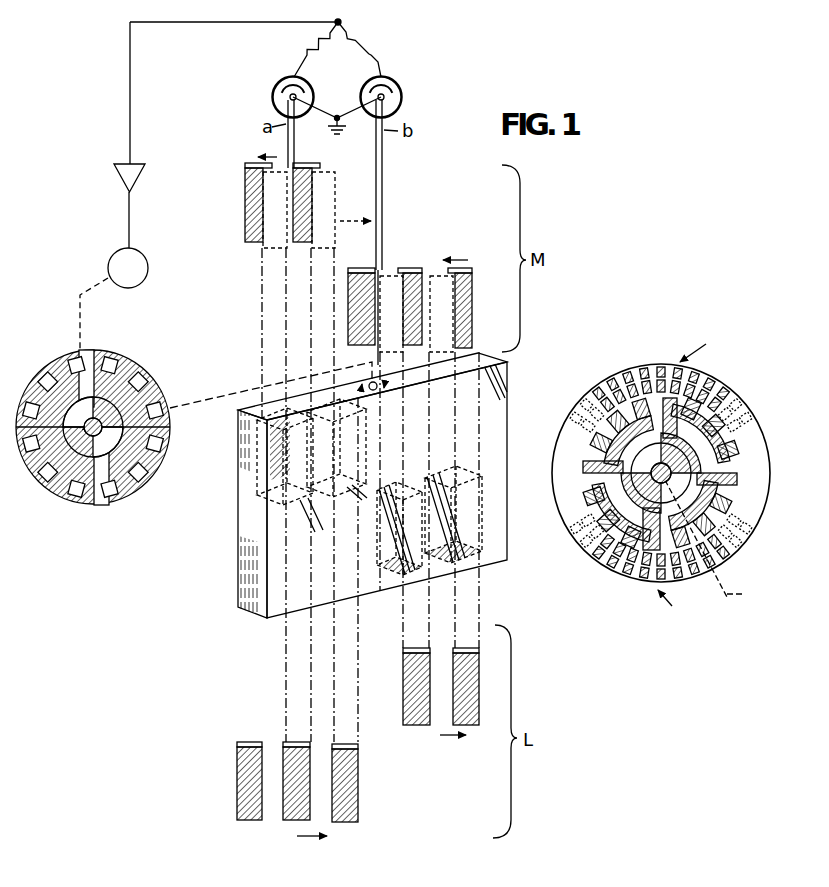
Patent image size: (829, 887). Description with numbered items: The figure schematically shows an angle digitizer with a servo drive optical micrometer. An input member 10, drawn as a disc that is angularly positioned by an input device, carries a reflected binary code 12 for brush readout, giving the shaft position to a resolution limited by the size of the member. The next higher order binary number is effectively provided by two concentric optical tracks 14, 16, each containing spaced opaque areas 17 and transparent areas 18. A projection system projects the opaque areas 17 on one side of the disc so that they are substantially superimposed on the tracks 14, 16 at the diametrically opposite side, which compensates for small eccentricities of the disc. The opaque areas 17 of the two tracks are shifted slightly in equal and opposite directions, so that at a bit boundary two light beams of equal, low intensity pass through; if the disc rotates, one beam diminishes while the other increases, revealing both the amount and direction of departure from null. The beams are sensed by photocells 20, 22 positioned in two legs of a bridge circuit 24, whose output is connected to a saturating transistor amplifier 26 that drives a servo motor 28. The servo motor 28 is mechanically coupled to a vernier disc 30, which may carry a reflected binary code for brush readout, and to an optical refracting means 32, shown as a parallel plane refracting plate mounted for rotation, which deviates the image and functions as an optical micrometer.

The input member 10 is at (590, 398).
The reflected binary code 12 is at (590, 436).
The optical track 14 is at (243, 184).
The optical track 16 is at (475, 290).
The opaque areas 17 is at (243, 819).
The transparent areas 18 is at (272, 819).
The photocell 20 is at (278, 88).
The photocell 22 is at (398, 93).
The bridge circuit 24 is at (372, 66).
The saturating transistor amplifier 26 is at (136, 167).
The servo motor 28 is at (140, 258).
The vernier disc 30 is at (140, 371).
The optical refracting means 32 is at (237, 603).